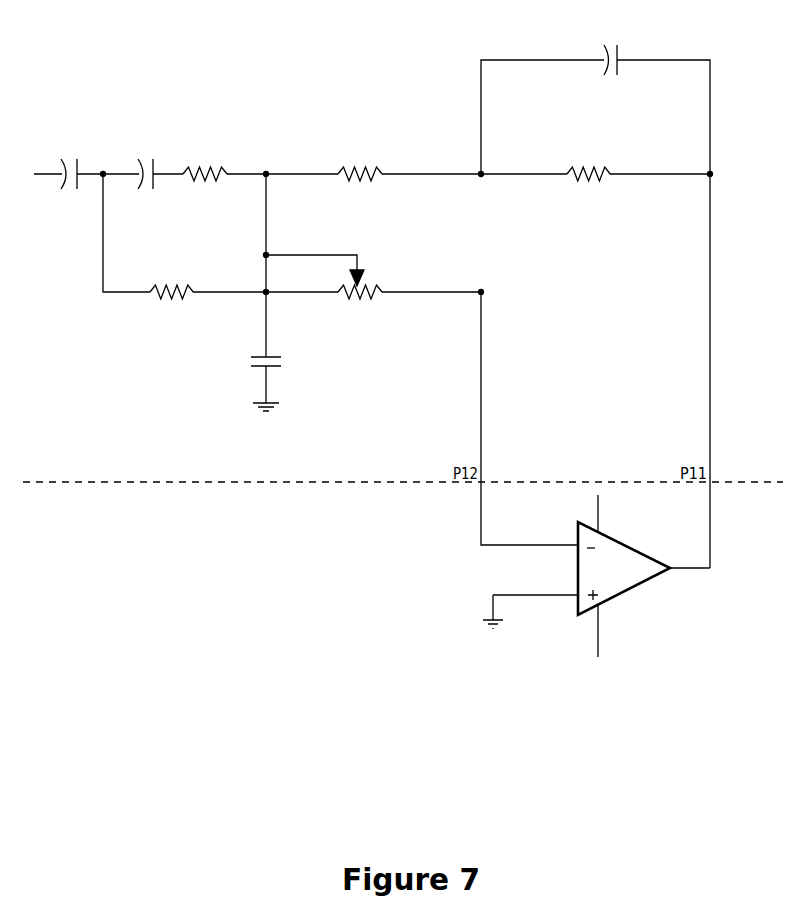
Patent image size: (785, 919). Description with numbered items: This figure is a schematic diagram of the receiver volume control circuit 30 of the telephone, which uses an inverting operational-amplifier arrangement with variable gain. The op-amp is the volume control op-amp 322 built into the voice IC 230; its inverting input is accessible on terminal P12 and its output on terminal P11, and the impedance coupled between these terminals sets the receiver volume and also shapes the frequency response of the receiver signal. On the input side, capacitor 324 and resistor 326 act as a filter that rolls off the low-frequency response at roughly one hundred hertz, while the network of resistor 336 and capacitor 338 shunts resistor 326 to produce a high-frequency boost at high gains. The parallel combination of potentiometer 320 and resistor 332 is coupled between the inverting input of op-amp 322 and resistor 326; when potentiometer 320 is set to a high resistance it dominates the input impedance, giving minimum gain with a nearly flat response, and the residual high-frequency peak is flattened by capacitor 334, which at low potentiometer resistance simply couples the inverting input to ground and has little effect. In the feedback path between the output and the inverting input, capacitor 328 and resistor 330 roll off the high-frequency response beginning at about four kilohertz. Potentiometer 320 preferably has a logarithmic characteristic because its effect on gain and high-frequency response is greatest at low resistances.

The receiver volume control circuit 30 is at (131, 396).
The voice IC 230 is at (156, 544).
The potentiometer 320 is at (361, 301).
The volume control op-amp 322 is at (620, 540).
The capacitor 324 is at (78, 158).
The resistor 326 is at (172, 301).
The capacitor 328 is at (618, 45).
The resistor 330 is at (588, 168).
The resistor 332 is at (359, 168).
The capacitor 334 is at (263, 364).
The resistor 336 is at (205, 165).
The capacitor 338 is at (154, 158).